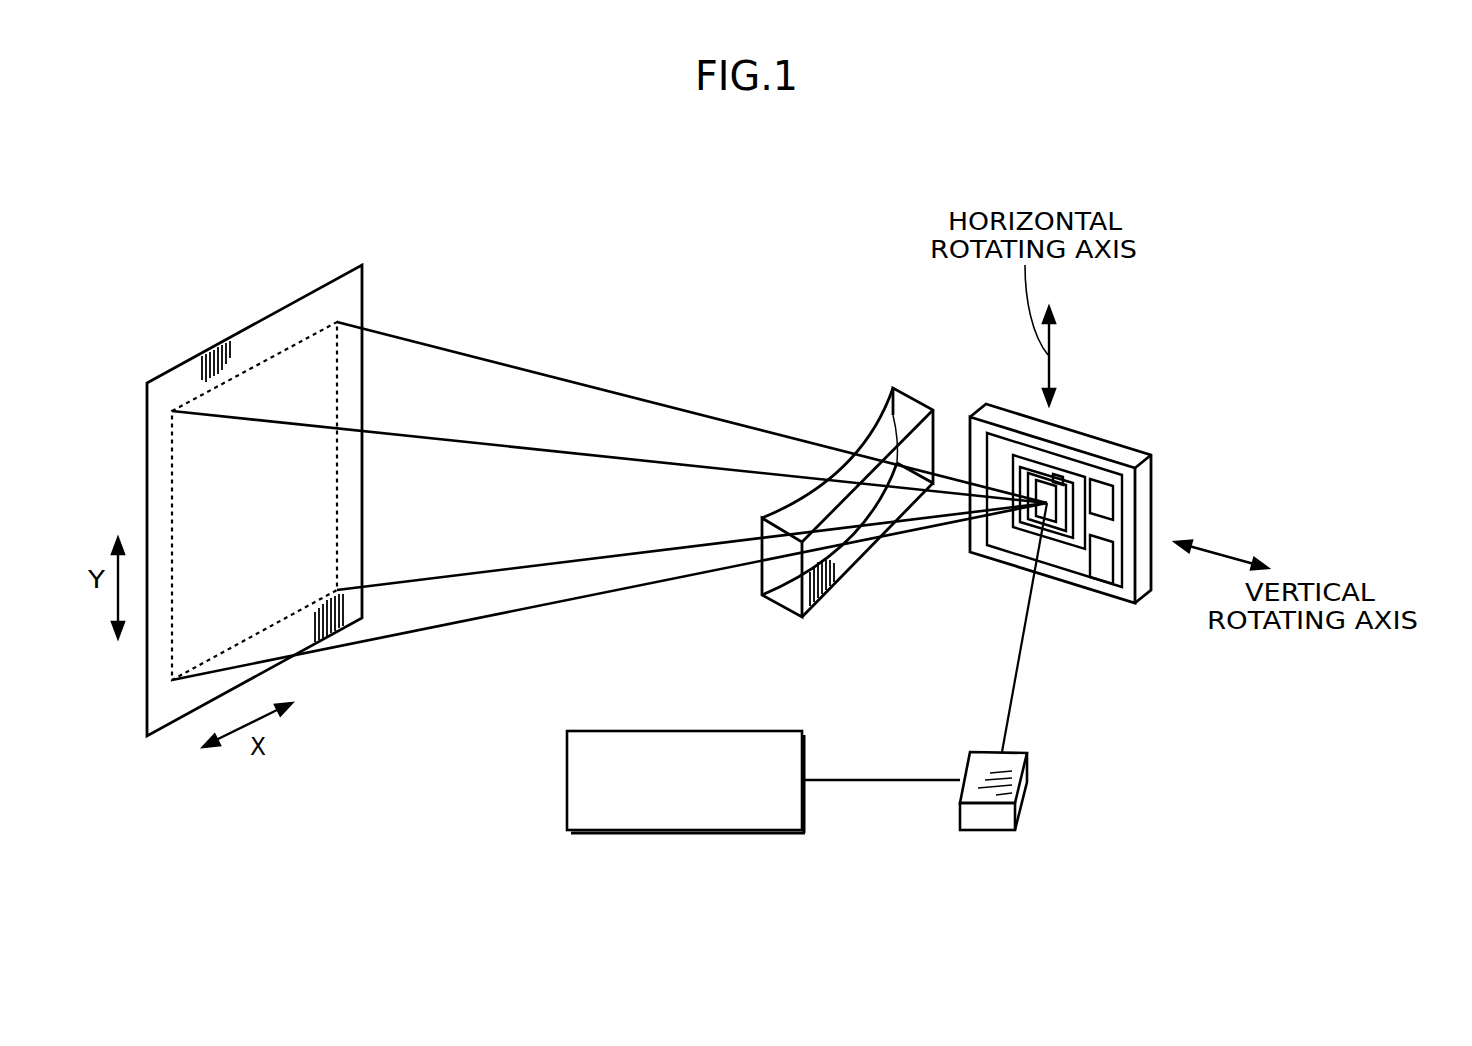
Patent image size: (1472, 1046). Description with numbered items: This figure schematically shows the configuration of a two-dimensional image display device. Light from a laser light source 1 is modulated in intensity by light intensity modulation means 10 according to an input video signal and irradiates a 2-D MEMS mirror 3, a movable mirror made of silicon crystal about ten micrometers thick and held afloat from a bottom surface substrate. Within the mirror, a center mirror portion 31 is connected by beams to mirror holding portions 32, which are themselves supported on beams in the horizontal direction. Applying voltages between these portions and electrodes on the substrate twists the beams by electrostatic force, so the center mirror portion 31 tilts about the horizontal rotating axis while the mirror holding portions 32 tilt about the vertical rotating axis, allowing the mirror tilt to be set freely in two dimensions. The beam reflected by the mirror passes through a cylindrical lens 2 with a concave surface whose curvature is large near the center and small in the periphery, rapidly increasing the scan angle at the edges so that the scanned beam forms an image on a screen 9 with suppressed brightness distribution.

The screen 9 is at (344, 292).
The cylindrical lens 2 is at (908, 406).
The 2-D MEMS mirror 3 is at (1211, 503).
The center mirror portion 31 is at (1168, 484).
The mirror holding portions 32 is at (1082, 553).
The light intensity modulation means 10 is at (600, 833).
The laser light source 1 is at (983, 833).